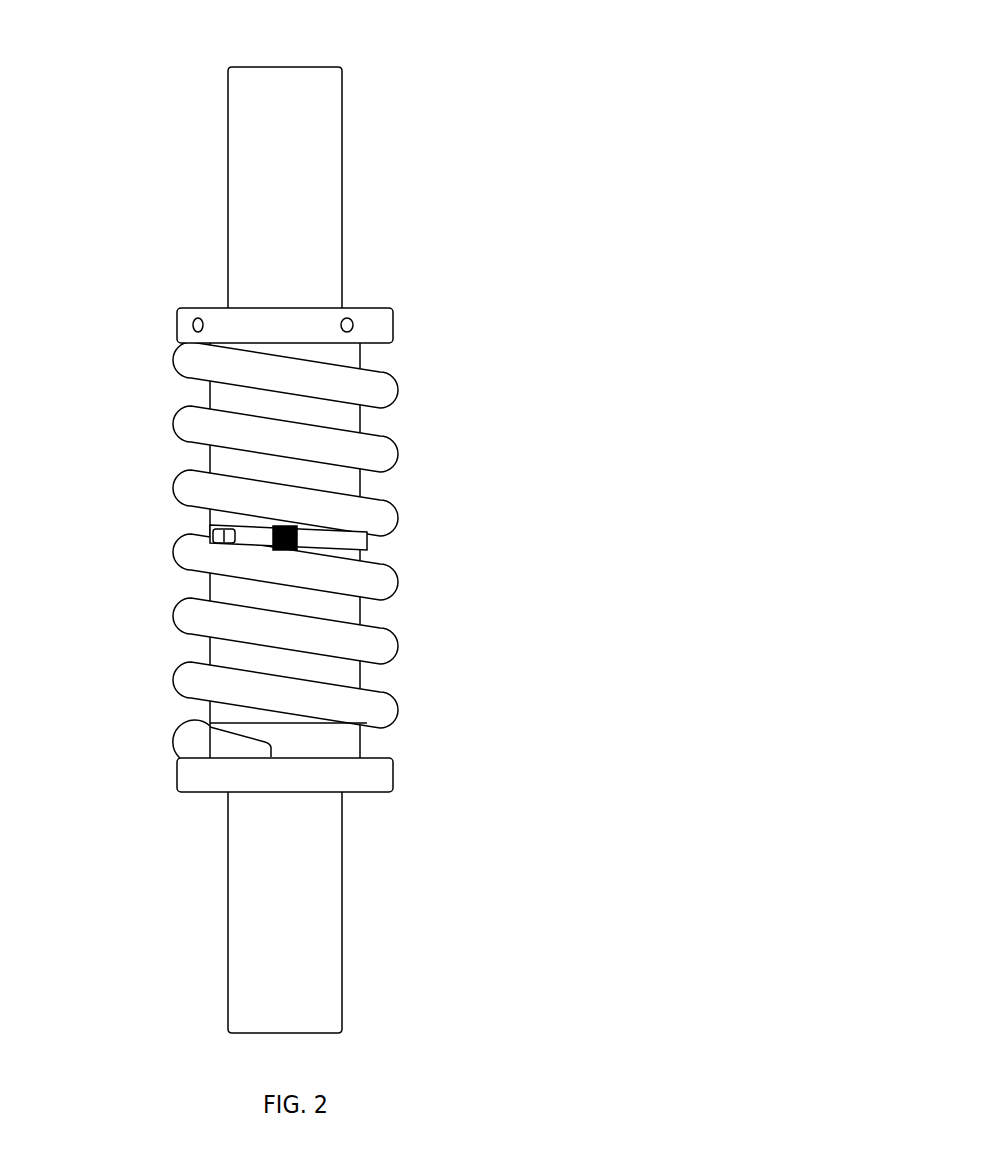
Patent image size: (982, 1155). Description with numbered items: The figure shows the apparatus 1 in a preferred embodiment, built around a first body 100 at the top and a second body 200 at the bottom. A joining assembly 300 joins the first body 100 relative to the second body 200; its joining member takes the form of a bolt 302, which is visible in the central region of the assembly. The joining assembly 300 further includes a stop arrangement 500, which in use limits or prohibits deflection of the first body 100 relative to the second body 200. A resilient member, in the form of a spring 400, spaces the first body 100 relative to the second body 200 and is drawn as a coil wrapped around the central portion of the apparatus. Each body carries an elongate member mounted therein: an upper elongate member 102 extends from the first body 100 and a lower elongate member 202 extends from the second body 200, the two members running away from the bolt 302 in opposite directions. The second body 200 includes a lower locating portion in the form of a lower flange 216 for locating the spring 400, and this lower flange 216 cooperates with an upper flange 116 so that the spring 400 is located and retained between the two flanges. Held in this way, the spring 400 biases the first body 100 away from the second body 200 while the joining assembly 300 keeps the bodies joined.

The apparatus 1 is at (351, 519).
The first body 100 is at (268, 205).
The upper elongate member 102 is at (333, 152).
The upper flange 116 is at (378, 320).
The second body 200 is at (277, 877).
The lower elongate member 202 is at (325, 978).
The lower flange 216 is at (378, 765).
The joining assembly 300 is at (266, 524).
The bolt 302 is at (212, 530).
The spring 400 is at (387, 450).
The stop arrangement 500 is at (205, 535).